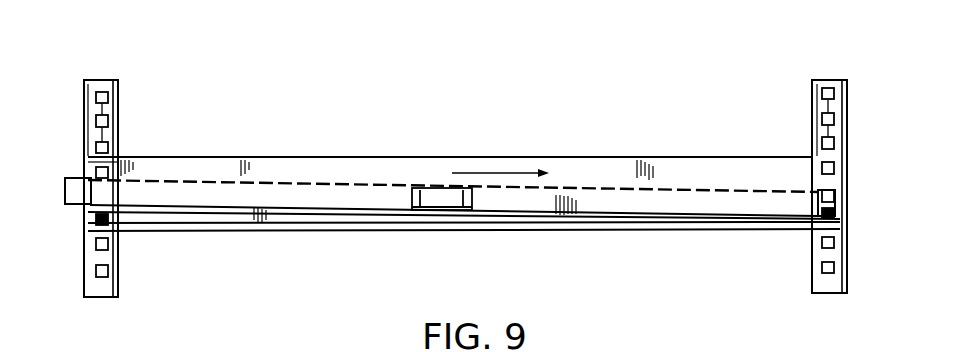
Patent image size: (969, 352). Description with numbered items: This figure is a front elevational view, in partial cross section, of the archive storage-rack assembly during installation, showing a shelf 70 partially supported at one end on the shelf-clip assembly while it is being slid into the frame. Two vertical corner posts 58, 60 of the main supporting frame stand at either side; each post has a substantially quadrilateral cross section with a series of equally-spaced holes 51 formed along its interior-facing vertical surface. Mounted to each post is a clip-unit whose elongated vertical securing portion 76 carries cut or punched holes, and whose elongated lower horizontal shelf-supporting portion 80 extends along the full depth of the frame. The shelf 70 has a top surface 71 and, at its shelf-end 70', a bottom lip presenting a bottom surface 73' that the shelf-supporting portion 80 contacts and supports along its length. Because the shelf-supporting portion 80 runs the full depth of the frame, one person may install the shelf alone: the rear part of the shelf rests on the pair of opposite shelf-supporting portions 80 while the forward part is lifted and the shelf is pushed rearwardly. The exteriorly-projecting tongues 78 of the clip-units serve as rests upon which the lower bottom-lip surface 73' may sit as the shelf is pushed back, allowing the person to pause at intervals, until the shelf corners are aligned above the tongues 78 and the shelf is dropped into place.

The vertical post 60 is at (84, 106).
The vertical post 58 is at (848, 105).
The holes 51 is at (108, 91).
The exteriorly-projecting tongues 78 is at (90, 218).
The vertical securing portion 76 is at (307, 168).
The shelf 70 is at (454, 151).
The top surface 71 is at (595, 189).
The shelf-end 70' is at (432, 155).
The bottom surface 73' is at (464, 261).
The shelf-supporting portion 80 is at (248, 231).